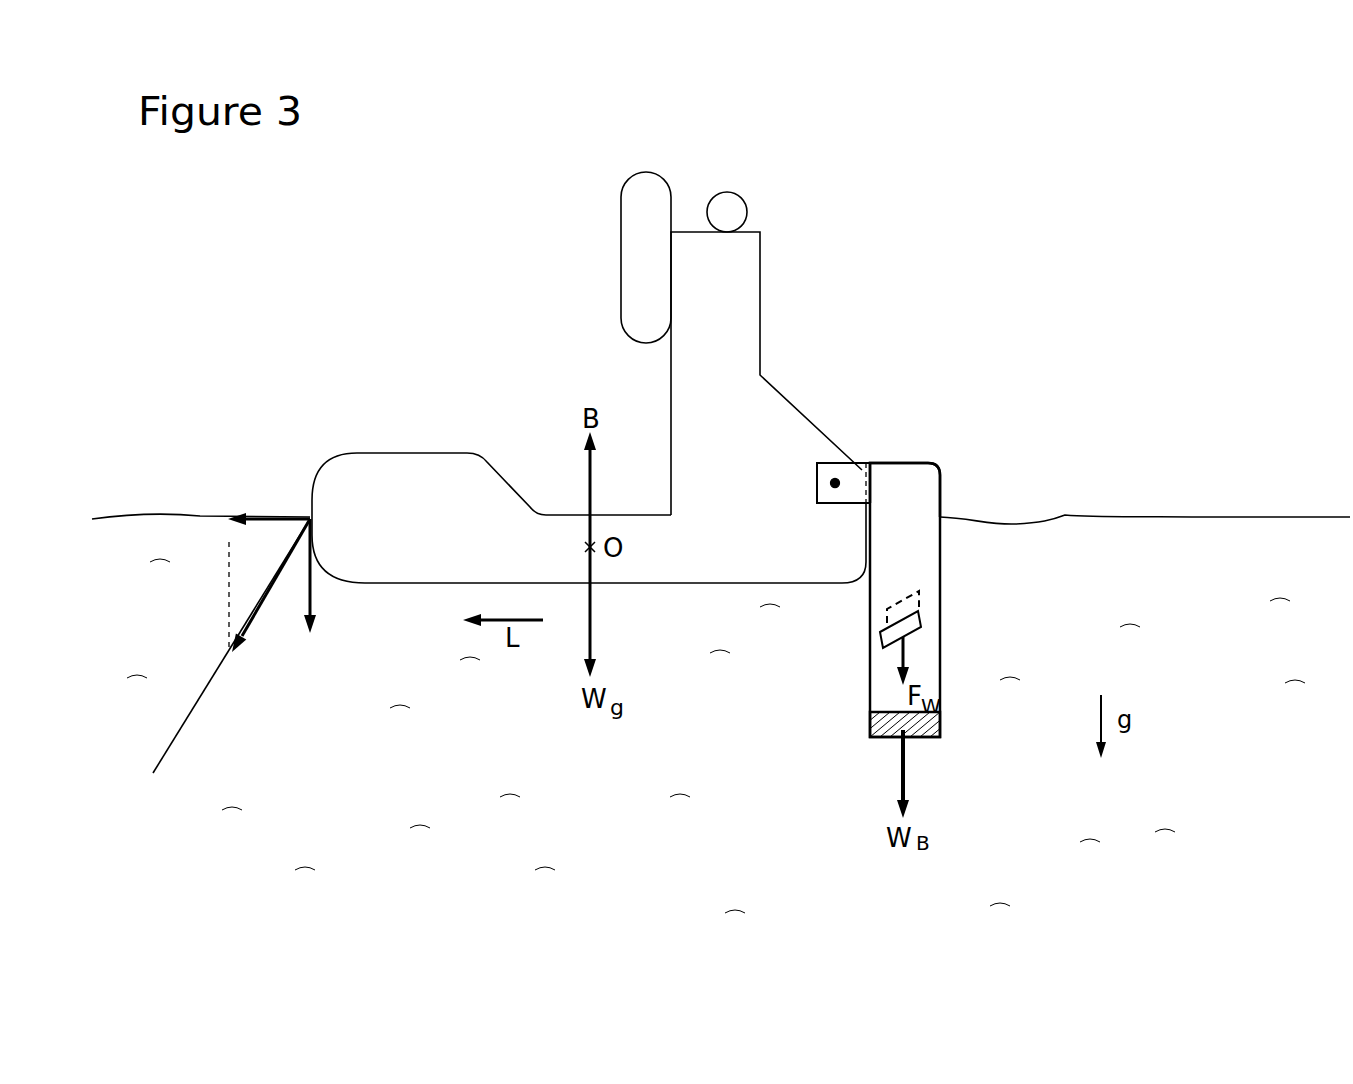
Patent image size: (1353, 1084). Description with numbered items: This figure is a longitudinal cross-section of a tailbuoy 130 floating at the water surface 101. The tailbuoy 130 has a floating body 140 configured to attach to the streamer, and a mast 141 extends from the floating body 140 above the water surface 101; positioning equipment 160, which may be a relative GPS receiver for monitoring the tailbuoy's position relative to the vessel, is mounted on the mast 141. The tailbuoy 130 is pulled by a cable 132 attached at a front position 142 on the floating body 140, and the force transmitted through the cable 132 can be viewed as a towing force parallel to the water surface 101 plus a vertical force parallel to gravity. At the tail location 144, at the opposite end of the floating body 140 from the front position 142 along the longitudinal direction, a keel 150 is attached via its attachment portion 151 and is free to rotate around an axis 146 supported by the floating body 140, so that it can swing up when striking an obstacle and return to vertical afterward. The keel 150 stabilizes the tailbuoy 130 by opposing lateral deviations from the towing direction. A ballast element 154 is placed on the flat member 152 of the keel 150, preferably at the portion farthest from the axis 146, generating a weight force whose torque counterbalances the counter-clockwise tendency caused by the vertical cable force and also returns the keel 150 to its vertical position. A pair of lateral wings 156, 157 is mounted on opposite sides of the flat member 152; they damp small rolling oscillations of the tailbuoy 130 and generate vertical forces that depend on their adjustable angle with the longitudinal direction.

The water surface 101 is at (1065, 515).
The tailbuoy 130 is at (405, 349).
The cable 132 is at (188, 724).
The floating body 140 is at (405, 462).
The mast 141 is at (742, 265).
The front position 142 is at (310, 512).
The tail location 144 is at (855, 506).
The axis 146 is at (835, 483).
The keel 150 is at (940, 592).
The attachment portion 151 is at (858, 474).
The flat member 152 is at (922, 487).
The ballast element 154 is at (932, 722).
The lateral wing 156 is at (868, 638).
The lateral wing 157 is at (919, 591).
The positioning equipment 160 is at (718, 198).